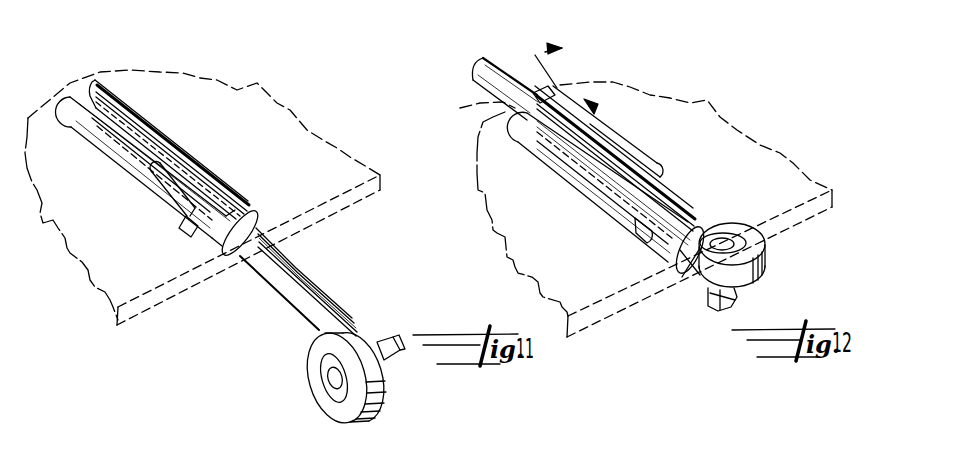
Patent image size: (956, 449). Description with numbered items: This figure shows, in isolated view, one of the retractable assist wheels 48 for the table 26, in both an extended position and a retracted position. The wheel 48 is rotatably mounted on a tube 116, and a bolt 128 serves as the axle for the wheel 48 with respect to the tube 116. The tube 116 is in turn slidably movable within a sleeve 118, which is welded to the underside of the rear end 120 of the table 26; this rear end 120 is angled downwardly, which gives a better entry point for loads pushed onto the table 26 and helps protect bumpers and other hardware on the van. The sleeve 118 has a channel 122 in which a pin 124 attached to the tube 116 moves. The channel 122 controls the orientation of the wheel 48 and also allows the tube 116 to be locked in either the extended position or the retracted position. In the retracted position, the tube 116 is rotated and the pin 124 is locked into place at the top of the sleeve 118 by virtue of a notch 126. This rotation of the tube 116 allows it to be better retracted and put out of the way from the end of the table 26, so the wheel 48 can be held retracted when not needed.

In FIG. 11, the table 26 is at (288, 97).
In FIG. 12, the table 26 is at (731, 117).
In FIG. 11, the wheels 48 is at (357, 333).
In FIG. 12, the wheels 48 is at (693, 287).
In FIG. 11, the tube 116 is at (272, 304).
In FIG. 12, the tube 116 is at (500, 102).
In FIG. 11, the sleeve 118 is at (126, 171).
In FIG. 12, the sleeve 118 is at (567, 177).
In FIG. 11, the rear end 120 is at (300, 113).
In FIG. 12, the rear end 120 is at (745, 127).
In FIG. 11, the channel 122 is at (141, 188).
In FIG. 12, the channel 122 is at (588, 193).
In FIG. 11, the pin 124 is at (186, 230).
In FIG. 12, the pin 124 is at (548, 84).
In FIG. 11, the notch 126 is at (98, 80).
In FIG. 12, the notch 126 is at (570, 90).
In FIG. 11, the bolt 128 is at (386, 337).
In FIG. 12, the bolt 128 is at (711, 307).